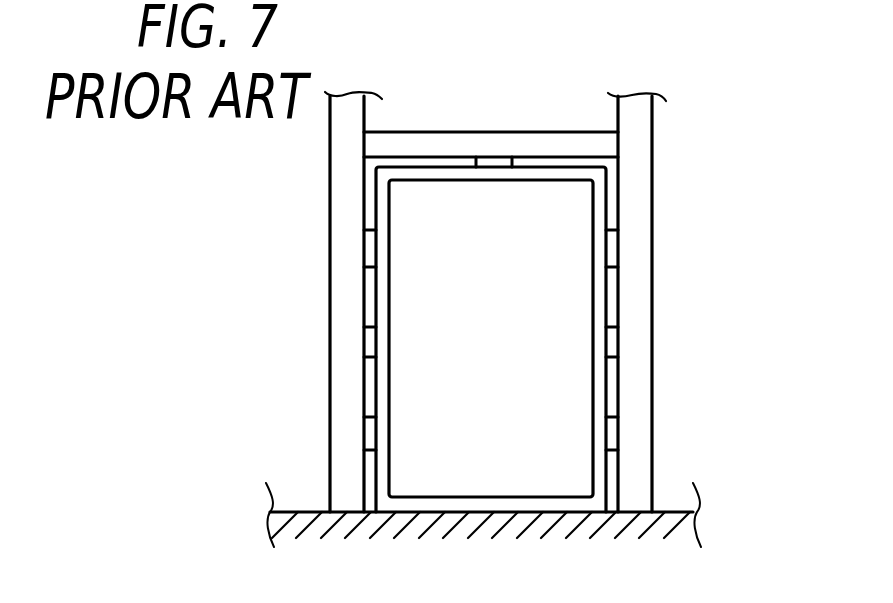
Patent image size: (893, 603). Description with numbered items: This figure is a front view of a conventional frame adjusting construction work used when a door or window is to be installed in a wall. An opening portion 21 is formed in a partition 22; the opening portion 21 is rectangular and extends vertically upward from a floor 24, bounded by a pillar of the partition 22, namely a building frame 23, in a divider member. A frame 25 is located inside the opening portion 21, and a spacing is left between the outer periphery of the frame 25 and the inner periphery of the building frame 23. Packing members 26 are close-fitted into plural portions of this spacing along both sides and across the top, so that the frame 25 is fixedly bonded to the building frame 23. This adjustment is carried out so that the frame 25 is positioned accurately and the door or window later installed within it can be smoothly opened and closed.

The opening portion 21 is at (412, 157).
The partition 22 is at (281, 307).
The building frame 23 is at (637, 185).
The floor 24 is at (540, 523).
The frame 25 is at (552, 180).
The packing members 26 is at (493, 160).